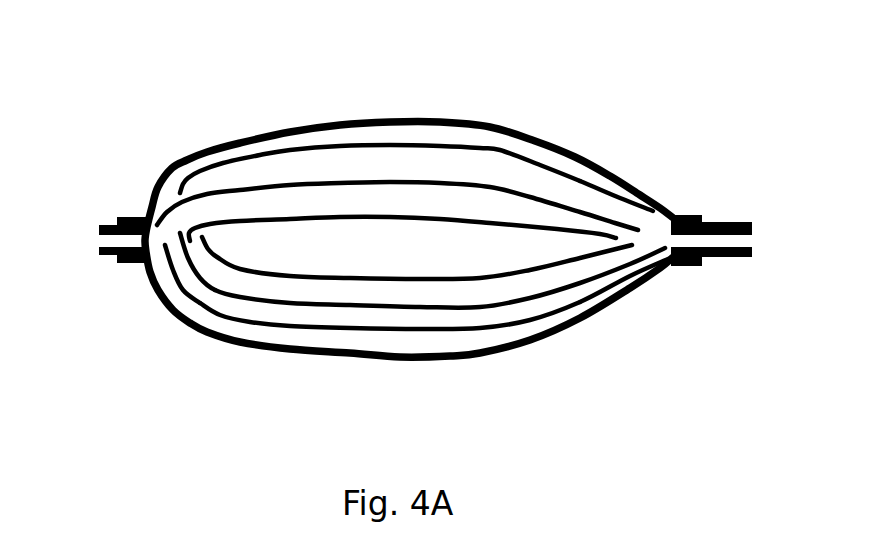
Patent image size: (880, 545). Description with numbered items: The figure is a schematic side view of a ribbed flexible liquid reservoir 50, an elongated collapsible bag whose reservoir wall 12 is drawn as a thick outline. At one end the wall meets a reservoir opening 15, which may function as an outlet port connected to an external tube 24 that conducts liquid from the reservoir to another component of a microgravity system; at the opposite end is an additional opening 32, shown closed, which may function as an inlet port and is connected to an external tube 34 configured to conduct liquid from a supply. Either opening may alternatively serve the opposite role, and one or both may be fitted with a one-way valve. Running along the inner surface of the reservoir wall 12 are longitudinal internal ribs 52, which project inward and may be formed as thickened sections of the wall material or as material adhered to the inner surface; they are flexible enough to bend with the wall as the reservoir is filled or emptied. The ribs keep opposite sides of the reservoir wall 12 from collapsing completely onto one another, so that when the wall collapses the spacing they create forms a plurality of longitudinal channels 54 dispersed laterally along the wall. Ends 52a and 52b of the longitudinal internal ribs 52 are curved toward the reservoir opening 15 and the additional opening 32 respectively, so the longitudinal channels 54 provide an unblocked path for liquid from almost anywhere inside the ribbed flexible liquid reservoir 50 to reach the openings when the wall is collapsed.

The ribbed flexible liquid reservoir 50 is at (179, 67).
The reservoir wall 12 is at (226, 340).
The additional opening 32 is at (126, 218).
The external tube 34 is at (107, 253).
The reservoir opening 15 is at (692, 213).
The external tube 24 is at (740, 257).
The longitudinal internal ribs 52 is at (500, 185).
The end of longitudinal internal rib 52a is at (648, 253).
The end of longitudinal internal rib 52b is at (173, 271).
The longitudinal channels 54 is at (453, 320).